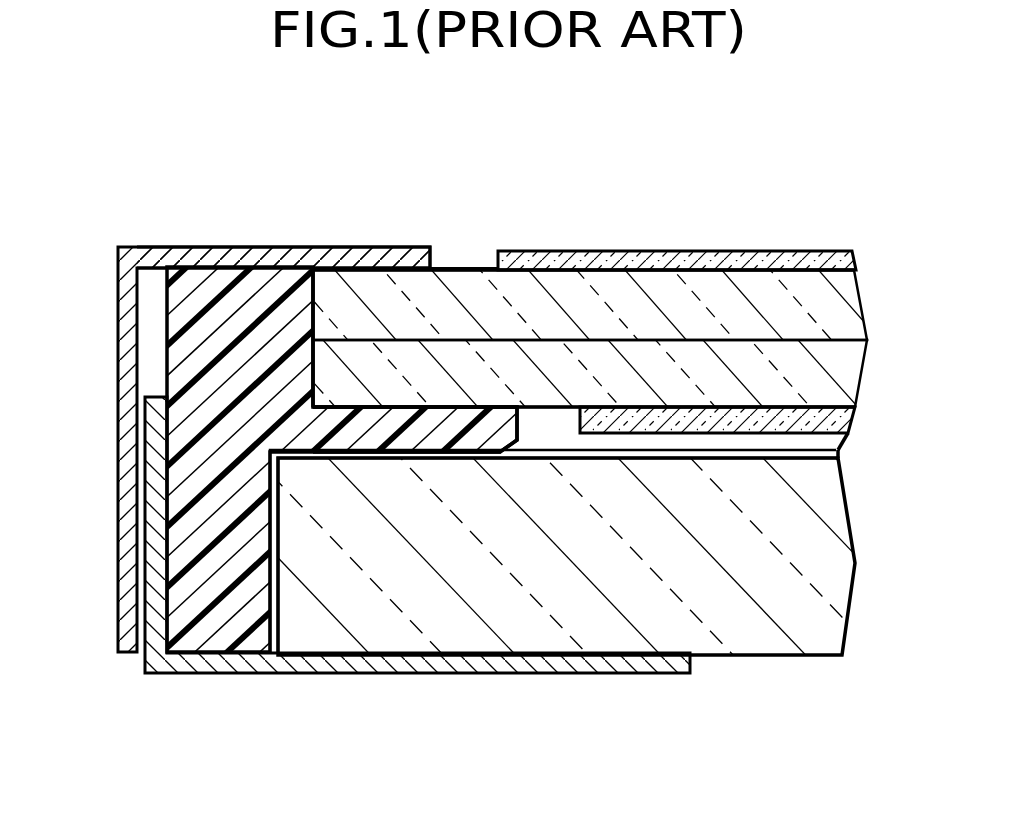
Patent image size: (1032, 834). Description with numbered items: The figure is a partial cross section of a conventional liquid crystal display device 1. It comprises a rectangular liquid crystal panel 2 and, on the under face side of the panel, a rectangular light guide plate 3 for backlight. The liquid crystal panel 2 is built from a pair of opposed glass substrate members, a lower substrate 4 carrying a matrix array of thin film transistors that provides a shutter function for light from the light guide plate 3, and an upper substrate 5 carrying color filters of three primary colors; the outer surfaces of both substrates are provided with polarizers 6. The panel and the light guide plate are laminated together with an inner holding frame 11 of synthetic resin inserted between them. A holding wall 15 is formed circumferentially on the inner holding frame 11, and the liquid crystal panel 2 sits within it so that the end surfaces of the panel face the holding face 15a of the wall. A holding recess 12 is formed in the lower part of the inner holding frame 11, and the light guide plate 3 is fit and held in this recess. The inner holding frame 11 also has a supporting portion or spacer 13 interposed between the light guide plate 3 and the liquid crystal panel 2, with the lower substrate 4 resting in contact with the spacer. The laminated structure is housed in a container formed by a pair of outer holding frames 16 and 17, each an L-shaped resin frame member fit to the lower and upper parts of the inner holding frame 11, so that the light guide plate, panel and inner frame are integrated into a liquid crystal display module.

The liquid crystal display device 1 is at (793, 237).
The liquid crystal panel 2 is at (463, 269).
The light guide plate 3 is at (850, 512).
The lower substrate 4 is at (848, 370).
The upper substrate 5 is at (845, 290).
The polarizer 6 is at (702, 258).
The inner holding frame 11 is at (165, 317).
The holding recess 12 is at (278, 598).
The spacer 13 is at (424, 442).
The holding wall 15 is at (210, 285).
The holding face 15a is at (318, 298).
The outer holding frame 16 is at (188, 663).
The outer holding frame 17 is at (275, 258).